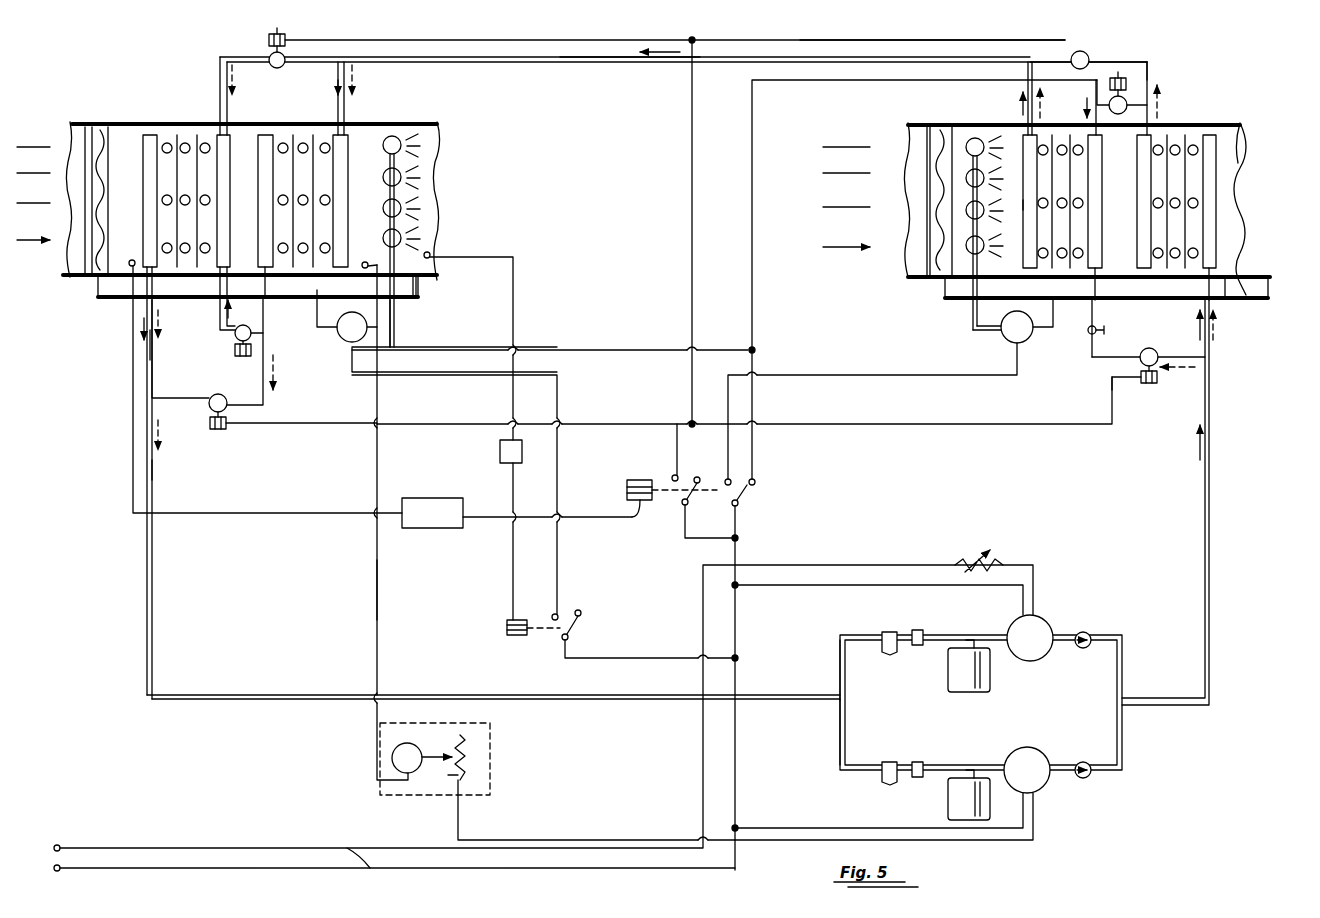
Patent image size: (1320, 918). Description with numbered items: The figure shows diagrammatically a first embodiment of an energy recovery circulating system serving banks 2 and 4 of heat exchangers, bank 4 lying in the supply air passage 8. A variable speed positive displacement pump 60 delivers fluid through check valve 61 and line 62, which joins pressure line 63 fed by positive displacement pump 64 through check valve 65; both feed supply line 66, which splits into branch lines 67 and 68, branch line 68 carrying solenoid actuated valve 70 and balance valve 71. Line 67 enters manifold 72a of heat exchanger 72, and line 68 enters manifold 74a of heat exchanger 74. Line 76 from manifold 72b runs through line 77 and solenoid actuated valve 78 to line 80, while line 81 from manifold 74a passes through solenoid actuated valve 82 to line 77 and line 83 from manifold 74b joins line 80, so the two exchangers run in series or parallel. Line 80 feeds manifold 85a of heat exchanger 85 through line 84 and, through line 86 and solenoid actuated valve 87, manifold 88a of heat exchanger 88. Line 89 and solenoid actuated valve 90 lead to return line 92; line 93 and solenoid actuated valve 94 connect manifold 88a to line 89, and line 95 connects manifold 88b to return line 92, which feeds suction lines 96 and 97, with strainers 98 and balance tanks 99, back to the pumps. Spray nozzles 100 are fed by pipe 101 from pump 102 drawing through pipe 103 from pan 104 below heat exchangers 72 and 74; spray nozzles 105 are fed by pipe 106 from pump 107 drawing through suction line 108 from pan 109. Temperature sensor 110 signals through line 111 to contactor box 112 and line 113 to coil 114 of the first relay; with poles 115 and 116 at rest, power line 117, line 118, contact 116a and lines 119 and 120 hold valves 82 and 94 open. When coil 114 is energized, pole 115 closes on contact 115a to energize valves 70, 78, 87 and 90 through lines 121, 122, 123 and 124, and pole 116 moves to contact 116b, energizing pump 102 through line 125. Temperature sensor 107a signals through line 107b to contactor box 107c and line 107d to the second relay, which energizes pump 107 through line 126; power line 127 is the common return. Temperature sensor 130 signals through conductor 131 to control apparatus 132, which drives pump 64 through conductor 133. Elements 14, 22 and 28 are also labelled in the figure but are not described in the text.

The bank of heat exchangers 2 is at (1020, 130).
The bank of heat exchangers 4 is at (252, 145).
The supply air passage 8 is at (62, 122).
The filter 14 is at (104, 135).
The exhaust duct filter 22 is at (943, 125).
The exhaust duct 28 is at (1242, 142).
The variable speed positive displacement pump 60 is at (1042, 658).
The check valve 61 is at (1082, 648).
The pressure line 62 is at (1122, 670).
The pressure line 63 is at (1122, 750).
The positive displacement pump 64 is at (1030, 750).
The check valve 65 is at (1082, 762).
The supply line 66 is at (1212, 438).
The branch line 67 is at (1215, 336).
The branch line 68 is at (1095, 362).
The solenoid actuated valve 70 is at (1155, 350).
The balance valve 71 is at (1098, 328).
The heat exchanger 72 is at (1180, 140).
The manifold 72a is at (1212, 138).
The manifold 72b is at (1140, 178).
The heat exchanger 74 is at (1072, 135).
The manifold 74a is at (1095, 262).
The manifold 74b is at (1120, 205).
The line 76 is at (1150, 118).
The line 77 is at (1150, 60).
The solenoid actuated valve 78 is at (1088, 52).
The line 80 is at (558, 62).
The line 81 is at (1097, 104).
The solenoid actuated valve 82 is at (1125, 98).
The line 83 is at (1028, 72).
The line 84 is at (352, 88).
The heat exchanger 85 is at (305, 140).
The manifold 85a is at (345, 142).
The line 86 is at (325, 62).
The solenoid actuated valve 87 is at (277, 68).
The heat exchanger 88 is at (196, 135).
The manifold 88a is at (229, 205).
The manifold 88b is at (128, 262).
The line 89 is at (275, 300).
The solenoid actuated valve 90 is at (218, 392).
The return line 92 is at (152, 470).
The line 93 is at (218, 312).
The solenoid actuated valve 94 is at (238, 342).
The line 95 is at (152, 384).
The suction line 96 is at (848, 686).
The suction line 97 is at (848, 752).
The strainer 98 is at (897, 650).
The balance tank 99 is at (960, 675).
The spray nozzles 100 is at (985, 135).
The pipe 101 is at (965, 312).
The pump 102 is at (998, 338).
The pipe 103 is at (1045, 338).
The pan 104 is at (1238, 305).
The spray nozzles 105 is at (400, 170).
The pipe 106 is at (396, 306).
The pump 107 is at (390, 345).
The temperature sensor 107a is at (432, 254).
The line 107b is at (520, 300).
The contactor box 107c is at (508, 458).
The line 107d is at (507, 595).
The suction line 108 is at (317, 312).
The pan 109 is at (425, 296).
The temperature sensor 110 is at (130, 266).
The line 111 is at (147, 370).
The contactor box 112 is at (452, 528).
The line 113 is at (552, 512).
The coil of relay 114 is at (635, 520).
The pole of relay 115 is at (680, 520).
The normally open contact 115a is at (672, 470).
The pole of relay 116 is at (740, 504).
The normally closed contact 116a is at (752, 485).
The normally open contact 116b is at (740, 475).
The power line 117 is at (345, 850).
The line 118 is at (738, 532).
The line 119 is at (755, 286).
The line 120 is at (505, 348).
The line 121 is at (948, 424).
The line 122 is at (884, 40).
The line 123 is at (505, 40).
The line 124 is at (380, 435).
The line 125 is at (825, 375).
The line 126 is at (505, 374).
The power line 127 is at (260, 848).
The temperature sensor 130 is at (375, 252).
The conductor 131 is at (375, 588).
The control apparatus 132 is at (495, 742).
The conductor 133 is at (548, 836).